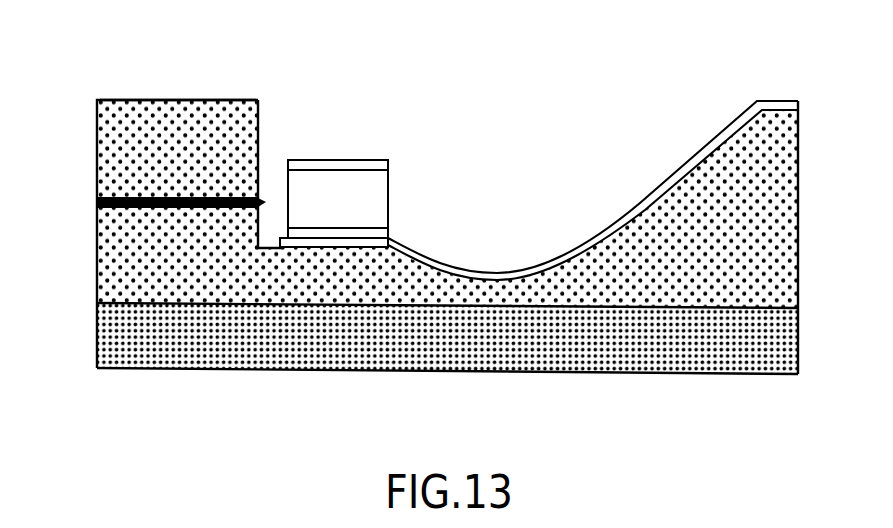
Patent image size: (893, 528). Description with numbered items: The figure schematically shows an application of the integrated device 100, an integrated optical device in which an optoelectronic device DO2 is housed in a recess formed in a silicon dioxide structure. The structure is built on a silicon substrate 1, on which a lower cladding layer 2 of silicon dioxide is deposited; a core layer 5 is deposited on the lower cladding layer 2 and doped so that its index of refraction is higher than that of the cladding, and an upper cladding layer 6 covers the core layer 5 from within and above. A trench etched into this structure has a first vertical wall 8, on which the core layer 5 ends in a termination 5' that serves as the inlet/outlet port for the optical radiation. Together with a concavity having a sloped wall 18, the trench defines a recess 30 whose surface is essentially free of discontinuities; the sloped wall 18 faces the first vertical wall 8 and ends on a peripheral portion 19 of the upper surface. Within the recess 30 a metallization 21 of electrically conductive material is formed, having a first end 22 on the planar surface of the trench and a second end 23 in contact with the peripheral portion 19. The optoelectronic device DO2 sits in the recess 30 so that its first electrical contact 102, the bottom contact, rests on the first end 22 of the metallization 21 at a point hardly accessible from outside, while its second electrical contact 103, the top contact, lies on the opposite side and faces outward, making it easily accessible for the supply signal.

The integrated device 100 is at (197, 92).
The first vertical wall 8 is at (262, 111).
The upper cladding layer 6 is at (116, 130).
The core layer 5 is at (153, 190).
The termination 5' is at (291, 146).
The lower cladding layer 2 is at (122, 259).
The silicon substrate 1 is at (125, 332).
The second electrical contact 103 is at (363, 162).
The first electrical contact 102 is at (392, 235).
The first end of the metallization 22 is at (340, 244).
The recess 30 is at (506, 182).
The metallization 21 is at (648, 195).
The peripheral portion 19 is at (775, 117).
The second end of the metallization 23 is at (775, 102).
The sloped wall 18 is at (674, 202).